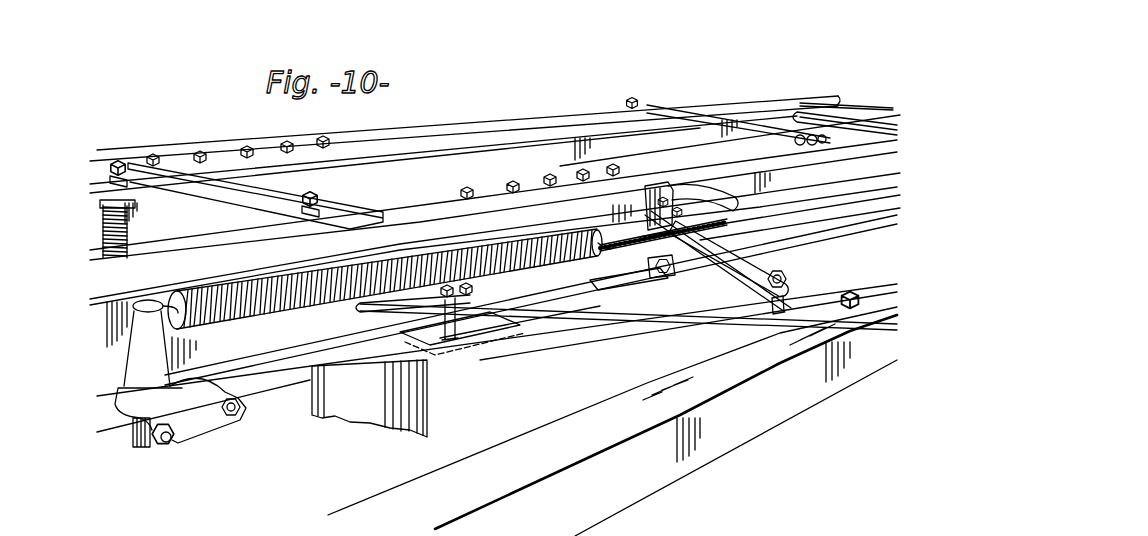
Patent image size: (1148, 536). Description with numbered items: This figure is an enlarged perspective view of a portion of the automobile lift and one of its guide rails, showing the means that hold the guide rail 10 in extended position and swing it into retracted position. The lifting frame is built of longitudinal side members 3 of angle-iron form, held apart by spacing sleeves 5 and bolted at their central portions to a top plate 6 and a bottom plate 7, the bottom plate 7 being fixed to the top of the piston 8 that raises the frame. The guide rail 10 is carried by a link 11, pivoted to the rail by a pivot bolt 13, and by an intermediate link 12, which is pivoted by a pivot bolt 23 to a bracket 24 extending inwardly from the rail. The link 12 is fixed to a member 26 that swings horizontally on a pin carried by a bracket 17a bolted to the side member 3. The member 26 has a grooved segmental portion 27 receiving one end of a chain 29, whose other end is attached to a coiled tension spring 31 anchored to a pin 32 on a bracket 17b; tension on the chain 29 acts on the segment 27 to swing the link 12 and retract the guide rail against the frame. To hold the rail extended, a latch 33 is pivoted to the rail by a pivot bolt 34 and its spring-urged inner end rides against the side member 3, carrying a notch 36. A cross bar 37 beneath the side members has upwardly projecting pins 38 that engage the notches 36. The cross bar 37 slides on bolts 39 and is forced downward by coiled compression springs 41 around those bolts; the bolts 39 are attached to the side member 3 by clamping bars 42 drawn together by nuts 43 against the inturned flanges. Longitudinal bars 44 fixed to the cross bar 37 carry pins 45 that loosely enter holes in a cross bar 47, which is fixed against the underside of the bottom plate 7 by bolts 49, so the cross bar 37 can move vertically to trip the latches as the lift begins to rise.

The longitudinal side member 3 is at (497, 130).
The spacing sleeve 5 is at (843, 104).
The top plate 6 is at (503, 163).
The bottom plate 7 is at (555, 318).
The piston 8 is at (360, 423).
The guide rail 10 is at (400, 131).
The link 11 is at (647, 108).
The intermediate link 12 is at (757, 262).
The pivot bolt 13 is at (634, 98).
The bracket 17a is at (685, 265).
The bracket 17b is at (195, 422).
The pivot bolt 23 is at (784, 275).
The bracket 24 is at (828, 296).
The member 26 is at (673, 183).
The segmental portion 27 is at (752, 205).
The chain 29 is at (722, 212).
The coiled tension spring 31 is at (305, 310).
The pin 32 is at (133, 355).
The latch 33 is at (612, 322).
The pivot bolt 34 is at (861, 300).
The notch 36 is at (400, 305).
The cross bar 37 is at (437, 375).
The pin 38 is at (503, 343).
The bolt 39 is at (116, 162).
The coiled compression spring 41 is at (129, 234).
The clamping bar 42 is at (247, 203).
The nut 43 is at (118, 178).
The longitudinal bar 44 is at (490, 353).
The pin 45 is at (675, 232).
The cross bar 47 is at (647, 300).
The bolt 49 is at (623, 240).